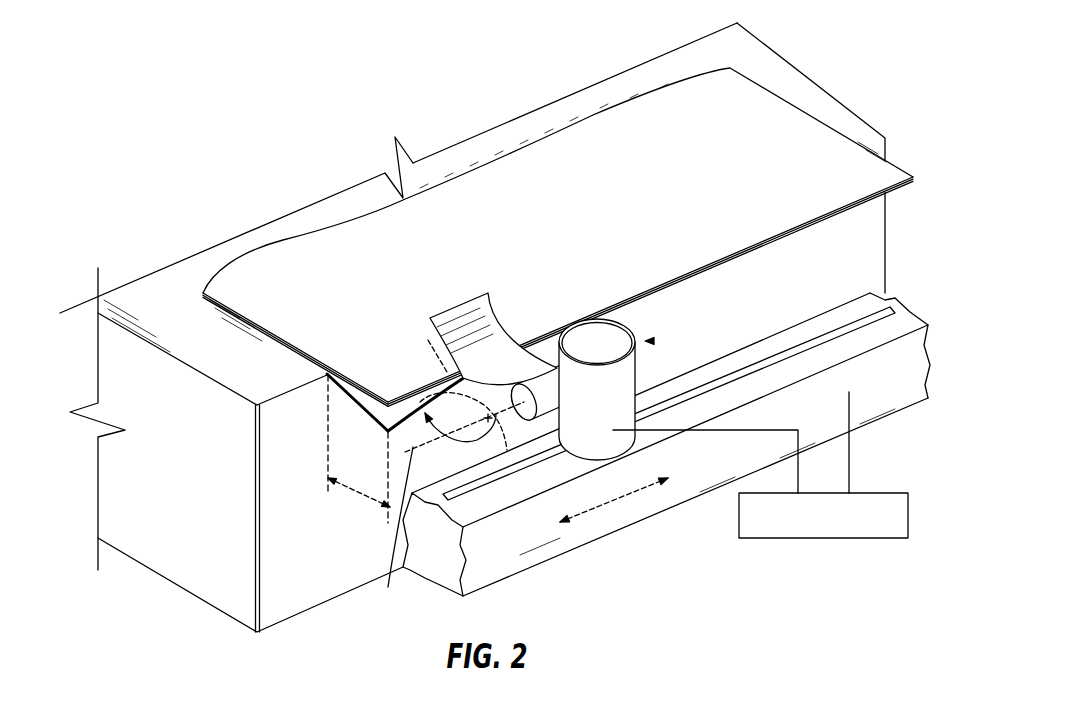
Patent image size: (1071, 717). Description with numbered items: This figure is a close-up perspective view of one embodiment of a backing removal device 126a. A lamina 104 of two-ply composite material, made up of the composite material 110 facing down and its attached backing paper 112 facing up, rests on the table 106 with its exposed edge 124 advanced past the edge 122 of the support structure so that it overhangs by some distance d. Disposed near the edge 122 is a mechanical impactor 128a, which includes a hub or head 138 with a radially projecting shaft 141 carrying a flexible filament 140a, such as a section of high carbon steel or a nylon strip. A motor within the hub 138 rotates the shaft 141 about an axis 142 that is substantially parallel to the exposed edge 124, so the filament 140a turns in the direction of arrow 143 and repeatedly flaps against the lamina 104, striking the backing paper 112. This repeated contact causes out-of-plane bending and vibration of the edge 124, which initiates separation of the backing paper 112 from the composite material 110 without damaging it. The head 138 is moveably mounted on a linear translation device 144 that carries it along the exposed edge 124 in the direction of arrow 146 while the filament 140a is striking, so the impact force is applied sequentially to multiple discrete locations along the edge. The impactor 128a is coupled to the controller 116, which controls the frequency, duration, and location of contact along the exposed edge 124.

The lamina 104 is at (493, 200).
The table 106 is at (143, 291).
The composite material 110 is at (328, 440).
The backing paper 112 is at (388, 382).
The controller 116 is at (823, 538).
The edge of the support structure 122 is at (282, 397).
The exposed edge 124 is at (858, 210).
The backing removal device 126a is at (272, 128).
The mechanical impactor 128a is at (650, 340).
The hub 138 is at (585, 337).
The flexible filament 140a is at (450, 320).
The shaft 141 is at (548, 383).
The axis 142 is at (388, 587).
The arrow 143 is at (388, 436).
The linear translation device 144 is at (513, 543).
The arrow 146 is at (642, 506).
The distance d is at (356, 497).